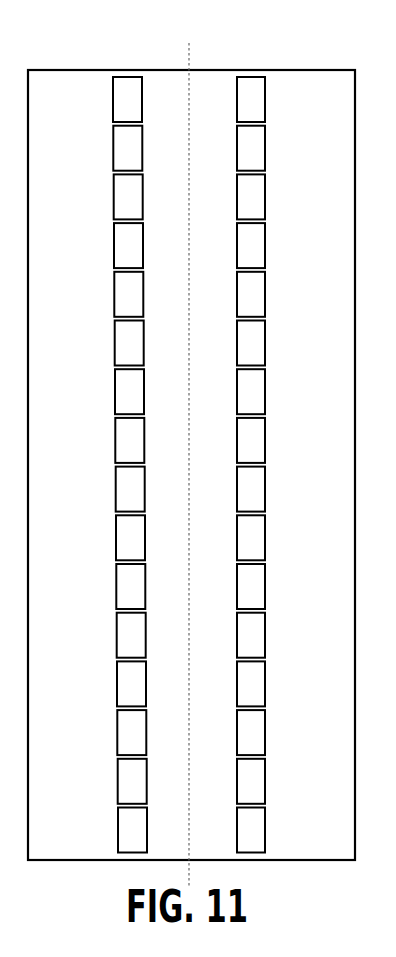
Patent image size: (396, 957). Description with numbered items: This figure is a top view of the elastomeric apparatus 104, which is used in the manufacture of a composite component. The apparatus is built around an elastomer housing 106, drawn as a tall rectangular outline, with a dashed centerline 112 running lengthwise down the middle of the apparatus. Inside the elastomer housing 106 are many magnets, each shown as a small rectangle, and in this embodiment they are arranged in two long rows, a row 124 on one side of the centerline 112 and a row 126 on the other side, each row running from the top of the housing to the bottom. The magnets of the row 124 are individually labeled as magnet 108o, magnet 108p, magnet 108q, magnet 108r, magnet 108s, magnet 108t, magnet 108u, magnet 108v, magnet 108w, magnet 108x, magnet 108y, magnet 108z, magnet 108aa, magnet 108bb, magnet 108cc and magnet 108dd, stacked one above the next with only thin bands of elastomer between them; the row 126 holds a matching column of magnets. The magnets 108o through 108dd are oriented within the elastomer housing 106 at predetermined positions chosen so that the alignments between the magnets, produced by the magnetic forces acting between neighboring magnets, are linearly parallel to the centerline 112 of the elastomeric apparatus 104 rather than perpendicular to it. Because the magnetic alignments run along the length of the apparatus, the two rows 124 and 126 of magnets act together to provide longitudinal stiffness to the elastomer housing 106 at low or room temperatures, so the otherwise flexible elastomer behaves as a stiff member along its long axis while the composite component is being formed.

The elastomeric apparatus 104 is at (155, 40).
The elastomer housing 106 is at (347, 187).
The magnet 108o is at (258, 101).
The magnet 108p is at (258, 150).
The magnet 108q is at (258, 198).
The magnet 108r is at (258, 247).
The magnet 108s is at (258, 296).
The magnet 108t is at (258, 344).
The magnet 108u is at (258, 393).
The magnet 108v is at (258, 442).
The magnet 108w is at (258, 491).
The magnet 108x is at (258, 539).
The magnet 108y is at (258, 588).
The magnet 108z is at (258, 637).
The magnet 108aa is at (258, 685).
The magnet 108bb is at (258, 734).
The magnet 108cc is at (258, 783).
The magnet 108dd is at (258, 832).
The centerline 112 is at (191, 177).
The row of magnets 124 is at (247, 70).
The row of magnets 126 is at (126, 70).